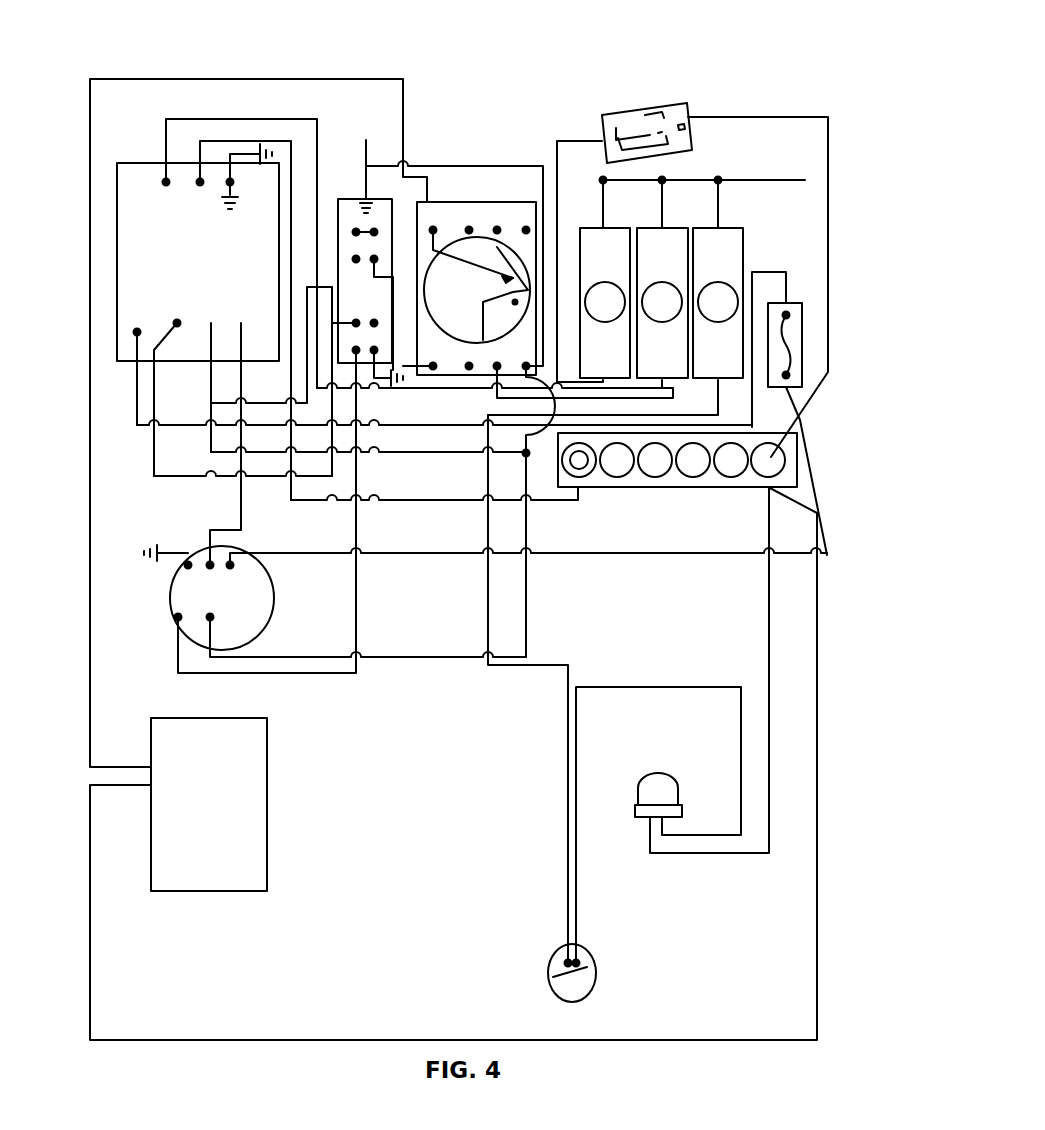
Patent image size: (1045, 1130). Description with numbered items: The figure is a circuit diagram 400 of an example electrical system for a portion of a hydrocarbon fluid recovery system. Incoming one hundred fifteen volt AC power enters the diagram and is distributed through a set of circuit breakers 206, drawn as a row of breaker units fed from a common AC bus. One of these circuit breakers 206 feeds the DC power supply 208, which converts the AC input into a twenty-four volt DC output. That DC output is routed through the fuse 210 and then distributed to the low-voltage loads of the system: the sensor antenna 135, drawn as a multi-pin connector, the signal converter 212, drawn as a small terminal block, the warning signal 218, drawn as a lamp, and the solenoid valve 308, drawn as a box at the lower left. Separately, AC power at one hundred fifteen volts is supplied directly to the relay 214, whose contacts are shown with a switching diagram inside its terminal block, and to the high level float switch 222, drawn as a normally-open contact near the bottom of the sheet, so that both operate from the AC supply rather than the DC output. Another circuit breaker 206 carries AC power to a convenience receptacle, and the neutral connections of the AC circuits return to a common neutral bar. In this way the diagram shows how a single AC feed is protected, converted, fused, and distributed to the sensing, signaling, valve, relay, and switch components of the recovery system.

The circuit diagram 400 is at (325, 35).
The DC power supply 208 is at (143, 163).
The signal converter 212 is at (358, 199).
The relay 214 is at (477, 202).
The circuit breakers 206 is at (592, 228).
The fuse 210 is at (803, 352).
The sensor antenna 135 is at (168, 597).
The solenoid valve 308 is at (267, 807).
The warning signal 218 is at (660, 773).
The high level float switch 222 is at (596, 975).